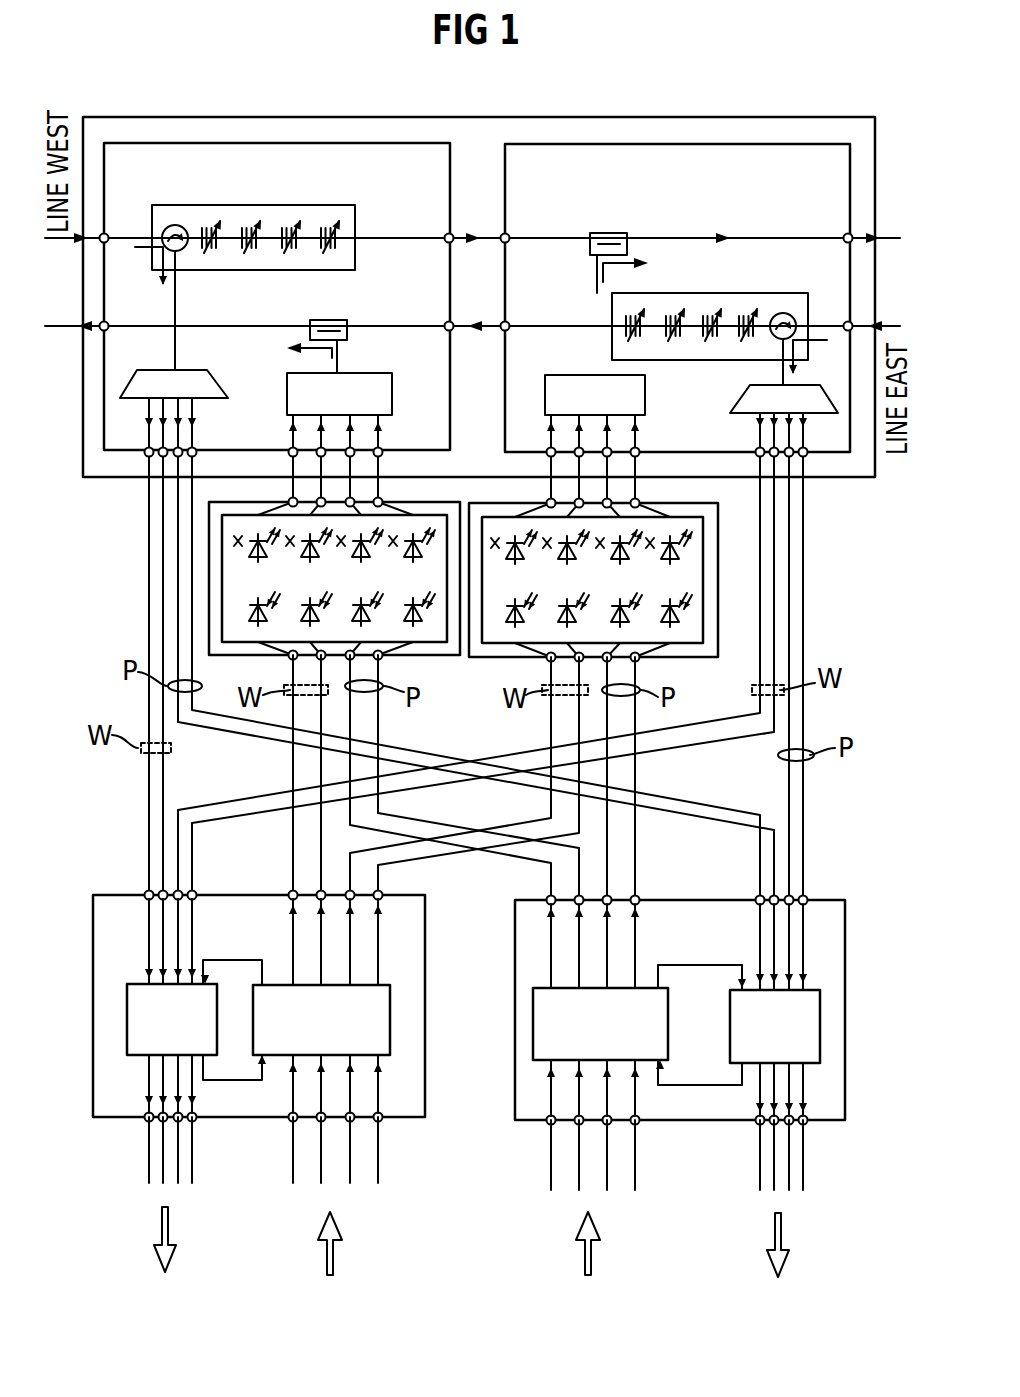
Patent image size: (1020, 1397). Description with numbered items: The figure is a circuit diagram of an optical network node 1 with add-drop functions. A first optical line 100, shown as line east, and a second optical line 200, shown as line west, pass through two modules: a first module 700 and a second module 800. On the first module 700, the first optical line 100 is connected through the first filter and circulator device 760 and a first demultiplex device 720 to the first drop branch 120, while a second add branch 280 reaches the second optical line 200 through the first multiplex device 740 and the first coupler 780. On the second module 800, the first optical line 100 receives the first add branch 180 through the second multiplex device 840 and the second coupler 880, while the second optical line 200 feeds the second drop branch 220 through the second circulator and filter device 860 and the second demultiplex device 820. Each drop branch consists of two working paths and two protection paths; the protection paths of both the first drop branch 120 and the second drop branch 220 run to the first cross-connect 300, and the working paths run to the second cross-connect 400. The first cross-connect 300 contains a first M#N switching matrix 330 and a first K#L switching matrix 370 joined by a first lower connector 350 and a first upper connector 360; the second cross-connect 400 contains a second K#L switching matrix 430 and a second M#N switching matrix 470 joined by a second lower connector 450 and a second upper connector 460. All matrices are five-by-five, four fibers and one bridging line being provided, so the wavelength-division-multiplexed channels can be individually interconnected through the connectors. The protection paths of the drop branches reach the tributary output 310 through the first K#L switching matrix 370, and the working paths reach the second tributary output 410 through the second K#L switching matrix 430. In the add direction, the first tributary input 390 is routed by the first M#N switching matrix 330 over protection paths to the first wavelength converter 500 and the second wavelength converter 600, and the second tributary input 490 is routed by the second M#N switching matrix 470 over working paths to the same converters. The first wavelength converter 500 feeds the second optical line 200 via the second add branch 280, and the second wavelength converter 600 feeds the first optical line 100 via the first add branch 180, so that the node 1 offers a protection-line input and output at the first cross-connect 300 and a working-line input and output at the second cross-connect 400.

The network node 1 is at (168, 72).
The second module 800 is at (276, 158).
The first module 700 is at (677, 160).
The second circulator and filter device 860 is at (318, 212).
The second coupler 880 is at (328, 320).
The second demultiplex device 820 is at (180, 376).
The second multiplex device 840 is at (366, 380).
The first add branch 180 is at (323, 468).
The second drop branch 220 is at (149, 496).
The first coupler 780 is at (590, 246).
The first filter and circulator device 760 is at (740, 300).
The second optical line 200 is at (768, 238).
The first optical line 100 is at (825, 325).
The first multiplex device 740 is at (578, 385).
The first demultiplex device 720 is at (748, 398).
The second add branch 280 is at (583, 468).
The first drop branch 120 is at (803, 500).
The second wavelength converter 600 is at (232, 582).
The first wavelength converter 500 is at (685, 645).
The second cross-connect 400 is at (282, 999).
The first cross-connect 300 is at (666, 1006).
The second K#L switching matrix 430 is at (135, 983).
The second upper connector 460 is at (233, 960).
The second M#N switching matrix 470 is at (383, 1008).
The second lower connector 450 is at (233, 1080).
The first upper connector 360 is at (690, 965).
The first K#L switching matrix 370 is at (810, 990).
The first M#N switching matrix 330 is at (542, 1030).
The first lower connector 350 is at (690, 1085).
The second tributary output 410 is at (167, 1190).
The second tributary input 490 is at (330, 1192).
The first tributary input 390 is at (585, 1195).
The tributary output 310 is at (780, 1200).